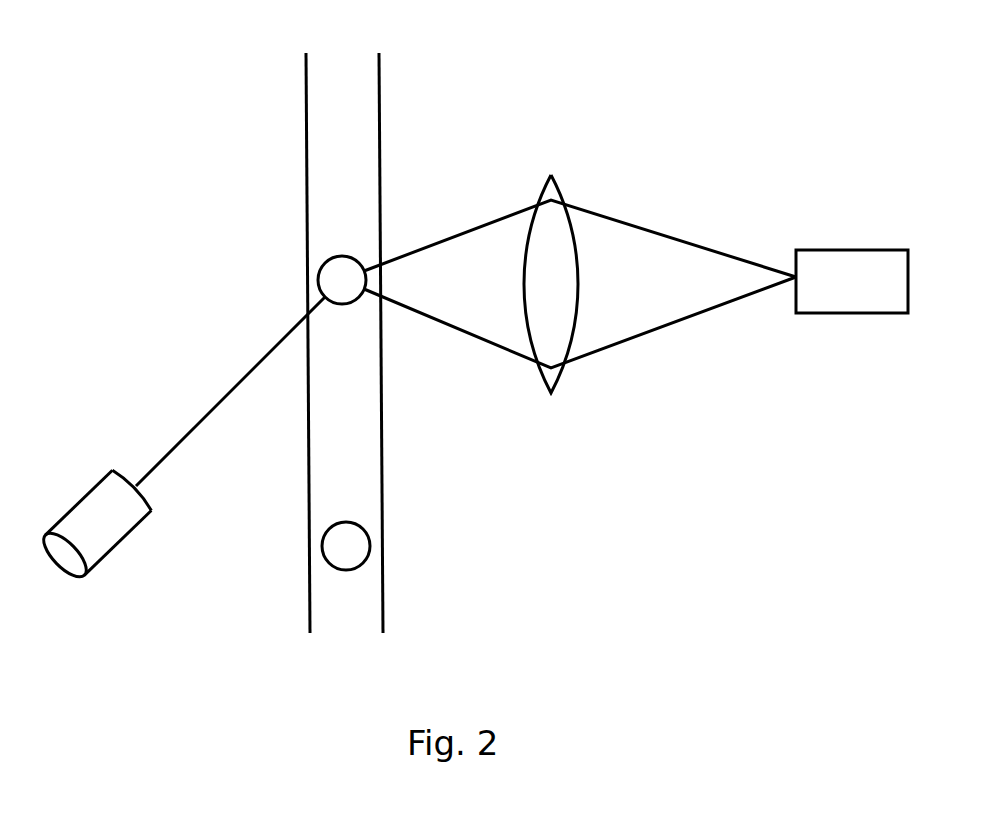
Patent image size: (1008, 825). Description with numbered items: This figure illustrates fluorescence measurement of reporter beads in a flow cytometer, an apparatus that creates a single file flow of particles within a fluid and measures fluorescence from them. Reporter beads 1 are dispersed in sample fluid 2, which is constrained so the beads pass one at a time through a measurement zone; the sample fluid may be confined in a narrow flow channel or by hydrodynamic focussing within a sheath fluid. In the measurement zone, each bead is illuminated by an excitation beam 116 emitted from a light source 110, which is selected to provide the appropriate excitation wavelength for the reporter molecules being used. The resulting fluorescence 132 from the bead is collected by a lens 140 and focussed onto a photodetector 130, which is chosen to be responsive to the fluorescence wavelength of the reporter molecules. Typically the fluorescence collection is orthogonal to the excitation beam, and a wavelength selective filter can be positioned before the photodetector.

The reporter bead 1 is at (332, 257).
The sample fluid 2 is at (305, 148).
The light source 110 is at (83, 497).
The excitation beam 116 is at (207, 415).
The photodetector 130 is at (835, 250).
The fluorescence 132 is at (428, 245).
The lens 140 is at (558, 192).